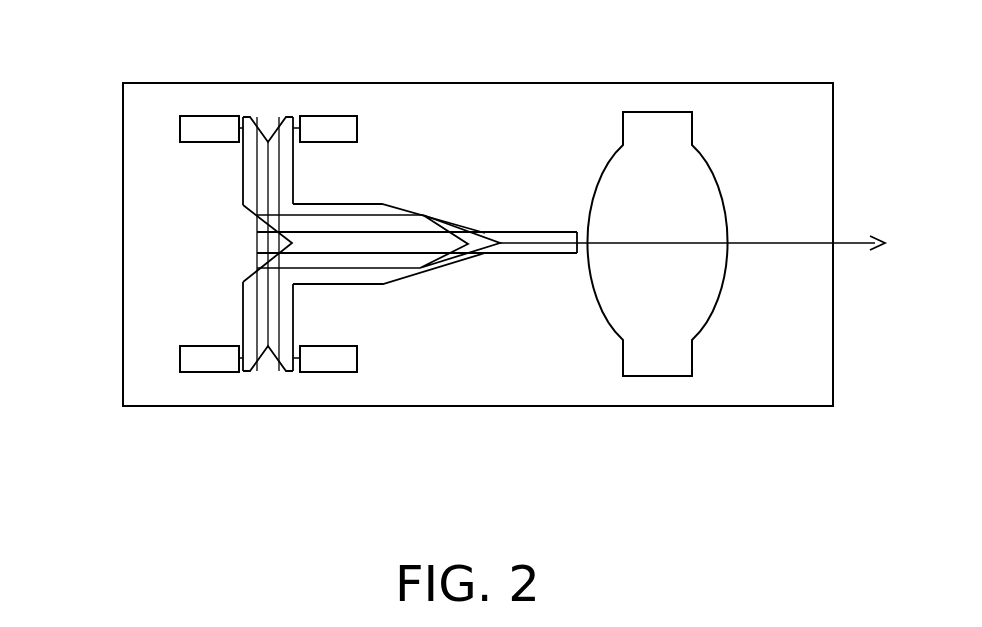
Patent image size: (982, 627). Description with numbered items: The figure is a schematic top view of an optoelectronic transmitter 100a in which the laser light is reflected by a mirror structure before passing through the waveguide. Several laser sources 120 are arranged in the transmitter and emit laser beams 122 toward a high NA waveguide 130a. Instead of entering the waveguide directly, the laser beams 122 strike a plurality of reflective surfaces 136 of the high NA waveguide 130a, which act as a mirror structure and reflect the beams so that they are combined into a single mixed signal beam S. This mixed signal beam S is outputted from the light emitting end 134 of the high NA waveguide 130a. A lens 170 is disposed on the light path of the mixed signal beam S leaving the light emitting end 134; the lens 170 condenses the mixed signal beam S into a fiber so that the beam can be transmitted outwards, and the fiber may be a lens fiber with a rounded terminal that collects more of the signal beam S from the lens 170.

The optoelectronic transmitter 100a is at (847, 478).
The laser source 120 is at (197, 127).
The laser beam 122 is at (295, 197).
The high NA waveguide 130a is at (410, 275).
The light emitting end 134 is at (533, 233).
The reflective surface 136 is at (275, 148).
The lens 170 is at (657, 128).
The mixed signal beam S is at (773, 243).